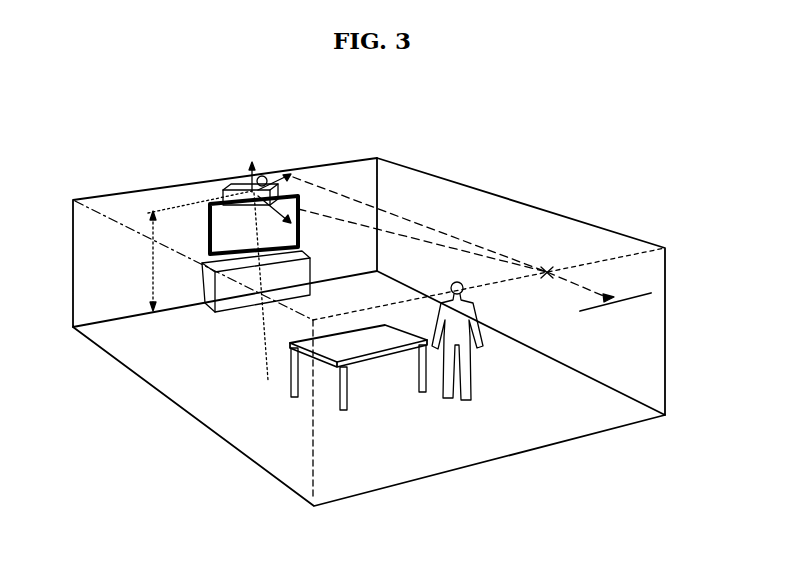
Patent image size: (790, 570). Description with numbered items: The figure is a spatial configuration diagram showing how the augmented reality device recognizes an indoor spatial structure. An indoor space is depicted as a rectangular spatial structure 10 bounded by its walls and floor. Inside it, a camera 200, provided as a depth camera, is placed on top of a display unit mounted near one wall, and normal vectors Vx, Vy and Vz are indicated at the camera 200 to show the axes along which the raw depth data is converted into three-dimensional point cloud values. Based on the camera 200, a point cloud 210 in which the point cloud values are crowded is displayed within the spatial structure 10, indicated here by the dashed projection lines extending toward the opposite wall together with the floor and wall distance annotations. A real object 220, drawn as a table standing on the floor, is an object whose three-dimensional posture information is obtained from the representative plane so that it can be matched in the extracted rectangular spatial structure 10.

The spatial structure 10 is at (519, 203).
The camera 200 is at (247, 192).
The point cloud 210 is at (363, 226).
The object 220 is at (370, 342).